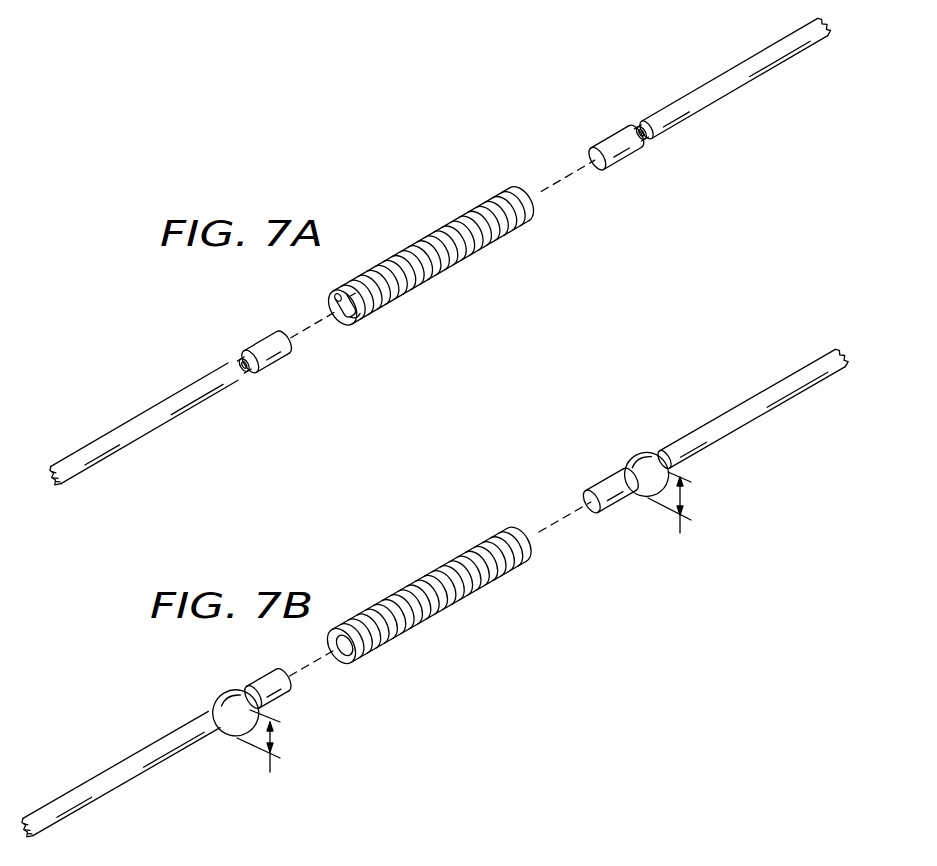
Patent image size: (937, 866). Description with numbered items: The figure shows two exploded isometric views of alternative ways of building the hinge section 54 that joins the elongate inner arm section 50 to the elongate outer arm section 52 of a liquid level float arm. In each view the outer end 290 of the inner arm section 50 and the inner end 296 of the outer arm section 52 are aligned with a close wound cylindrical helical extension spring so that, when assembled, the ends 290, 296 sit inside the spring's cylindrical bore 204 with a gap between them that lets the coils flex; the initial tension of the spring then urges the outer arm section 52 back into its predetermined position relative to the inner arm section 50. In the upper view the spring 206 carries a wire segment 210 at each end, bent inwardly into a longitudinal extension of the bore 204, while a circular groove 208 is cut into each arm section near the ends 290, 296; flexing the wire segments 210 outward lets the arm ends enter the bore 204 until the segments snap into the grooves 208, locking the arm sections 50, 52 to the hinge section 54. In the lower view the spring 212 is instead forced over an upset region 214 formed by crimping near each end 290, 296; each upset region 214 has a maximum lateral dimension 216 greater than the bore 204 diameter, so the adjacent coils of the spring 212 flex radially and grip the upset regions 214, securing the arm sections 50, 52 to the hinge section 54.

In FIG. 7A, the inner arm section 50 is at (147, 412).
In FIG. 7B, the inner arm section 50 is at (125, 767).
In FIG. 7A, the outer arm section 52 is at (733, 68).
In FIG. 7B, the outer arm section 52 is at (747, 400).
In FIG. 7A, the hinge section 54 is at (428, 193).
In FIG. 7A, the cylindrical bore 204 is at (338, 304).
In FIG. 7B, the cylindrical bore 204 is at (339, 668).
In FIG. 7A, the close wound cylindrical helical extension spring 206 is at (397, 253).
In FIG. 7A, the circular groove 208 is at (246, 376).
In FIG. 7A, the wire segment 210 is at (371, 317).
In FIG. 7B, the close wound cylindrical helical extension spring 212 is at (423, 578).
In FIG. 7B, the upset region 214 is at (230, 714).
In FIG. 7B, the maximum lateral dimension 216 is at (468, 640).
In FIG. 7A, the outer end of inner arm section 290 is at (257, 347).
In FIG. 7B, the outer end of inner arm section 290 is at (270, 682).
In FIG. 7A, the inner end of outer arm section 296 is at (612, 140).
In FIG. 7B, the inner end of outer arm section 296 is at (607, 483).